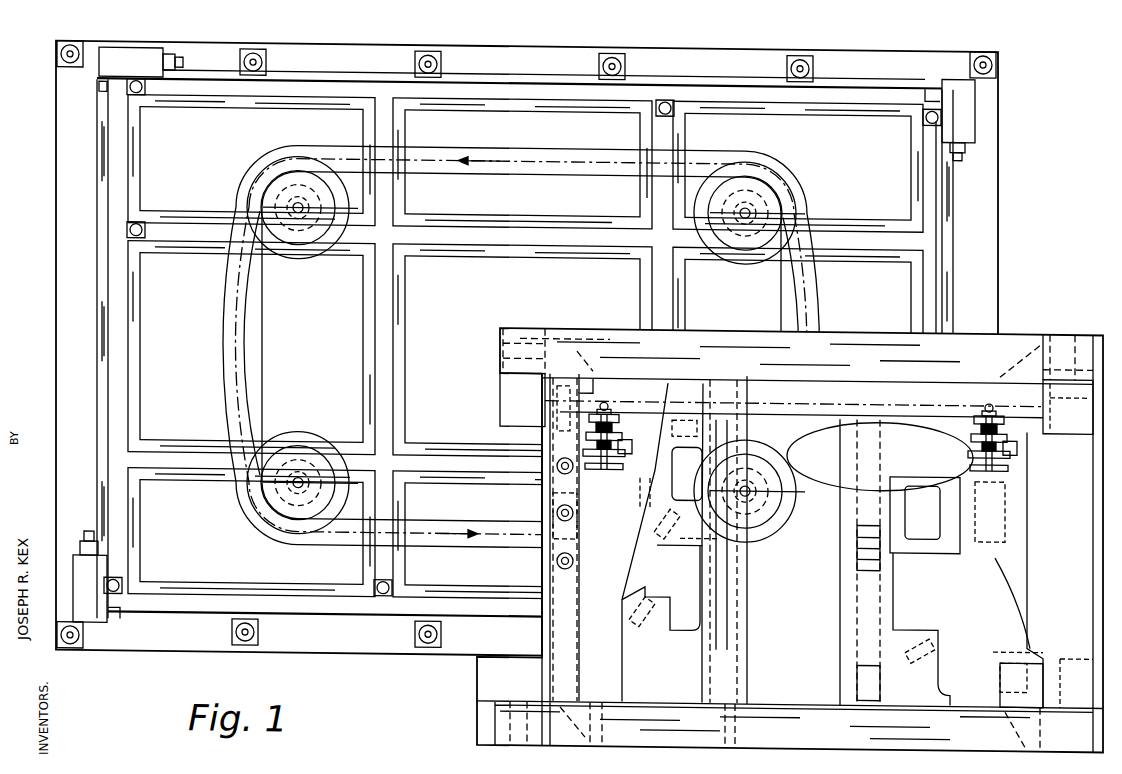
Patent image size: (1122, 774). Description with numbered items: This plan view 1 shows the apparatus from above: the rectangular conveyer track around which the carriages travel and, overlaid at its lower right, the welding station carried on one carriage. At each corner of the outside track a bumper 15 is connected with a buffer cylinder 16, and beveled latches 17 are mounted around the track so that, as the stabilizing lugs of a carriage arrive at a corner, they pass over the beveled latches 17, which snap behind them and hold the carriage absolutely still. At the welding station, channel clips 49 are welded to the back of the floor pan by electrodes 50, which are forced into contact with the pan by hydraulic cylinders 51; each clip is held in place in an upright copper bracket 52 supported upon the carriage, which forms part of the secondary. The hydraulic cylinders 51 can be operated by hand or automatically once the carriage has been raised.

The machine 1 is at (1020, 537).
The bumper 15 is at (98, 79).
The buffer cylinder 16 is at (130, 49).
The beveled latch 17 is at (128, 90).
The channel clip 49 is at (545, 394).
The electrode 50 is at (598, 414).
The hydraulic cylinder 51 is at (548, 486).
The upright copper bracket 52 is at (958, 401).